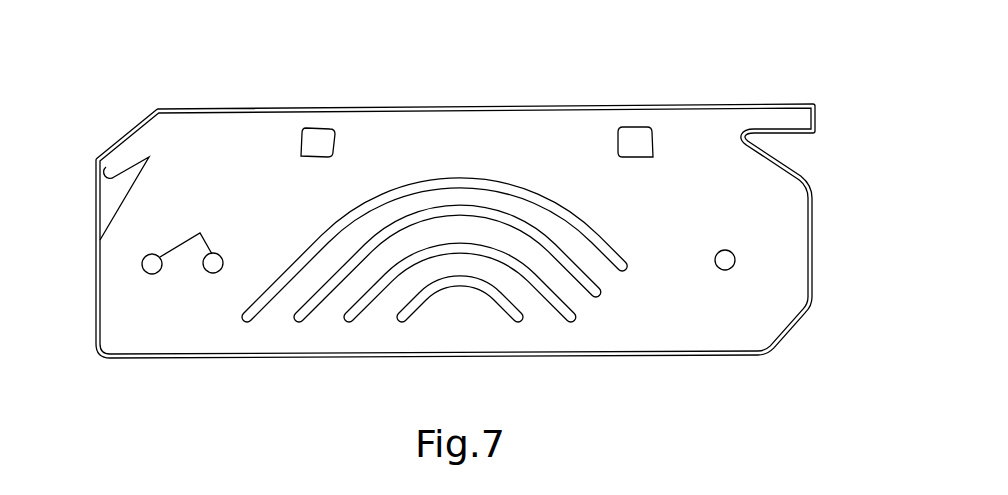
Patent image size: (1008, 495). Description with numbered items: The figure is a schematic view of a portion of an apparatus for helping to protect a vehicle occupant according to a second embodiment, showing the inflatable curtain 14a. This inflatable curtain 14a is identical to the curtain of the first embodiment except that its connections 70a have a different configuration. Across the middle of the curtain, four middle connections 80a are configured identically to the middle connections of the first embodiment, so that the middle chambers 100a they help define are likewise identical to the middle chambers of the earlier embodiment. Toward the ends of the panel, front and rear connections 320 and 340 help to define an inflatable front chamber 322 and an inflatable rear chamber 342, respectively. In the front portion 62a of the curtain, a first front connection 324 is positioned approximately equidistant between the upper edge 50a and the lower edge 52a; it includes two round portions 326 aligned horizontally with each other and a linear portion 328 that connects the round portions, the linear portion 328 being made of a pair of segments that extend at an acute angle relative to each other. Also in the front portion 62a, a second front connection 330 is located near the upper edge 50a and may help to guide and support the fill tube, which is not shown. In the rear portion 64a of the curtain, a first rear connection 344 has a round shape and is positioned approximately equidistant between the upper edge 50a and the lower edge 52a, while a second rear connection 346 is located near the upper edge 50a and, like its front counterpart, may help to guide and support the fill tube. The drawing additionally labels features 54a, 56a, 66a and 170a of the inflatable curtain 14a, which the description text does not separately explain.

The inflatable curtain 14a is at (272, 77).
The upper edge 50a is at (427, 107).
The lower edge 52a is at (293, 358).
The left side edge 54a is at (97, 258).
The right side edge 56a is at (812, 223).
The front portion 62a is at (165, 337).
The rear portion 64a is at (647, 308).
The central region 66a is at (463, 312).
The connections 70a is at (623, 265).
The middle connections 80a is at (462, 283).
The middle chambers 100a is at (413, 260).
The lower central region 170a is at (377, 337).
The front connection 320 is at (165, 252).
The front chamber 322 is at (229, 190).
The first front connection 324 is at (178, 244).
The round portions 326 is at (223, 264).
The linear portion 328 is at (199, 232).
The second front connection 330 is at (317, 148).
The rear connection 340 is at (727, 250).
The rear chamber 342 is at (690, 185).
The first rear connection 344 is at (721, 268).
The second rear connection 346 is at (617, 138).